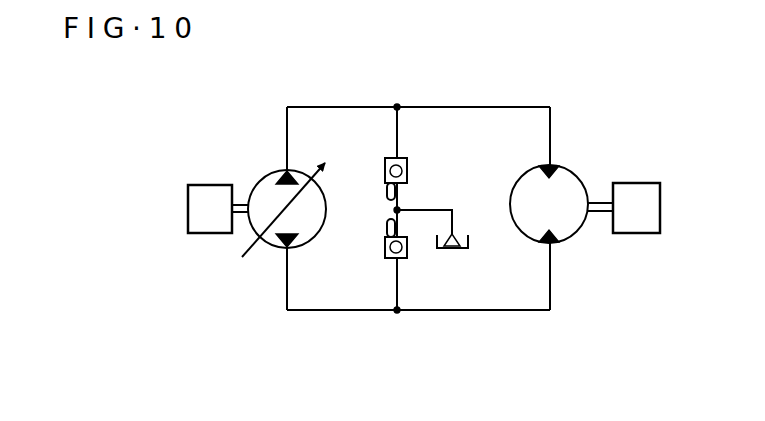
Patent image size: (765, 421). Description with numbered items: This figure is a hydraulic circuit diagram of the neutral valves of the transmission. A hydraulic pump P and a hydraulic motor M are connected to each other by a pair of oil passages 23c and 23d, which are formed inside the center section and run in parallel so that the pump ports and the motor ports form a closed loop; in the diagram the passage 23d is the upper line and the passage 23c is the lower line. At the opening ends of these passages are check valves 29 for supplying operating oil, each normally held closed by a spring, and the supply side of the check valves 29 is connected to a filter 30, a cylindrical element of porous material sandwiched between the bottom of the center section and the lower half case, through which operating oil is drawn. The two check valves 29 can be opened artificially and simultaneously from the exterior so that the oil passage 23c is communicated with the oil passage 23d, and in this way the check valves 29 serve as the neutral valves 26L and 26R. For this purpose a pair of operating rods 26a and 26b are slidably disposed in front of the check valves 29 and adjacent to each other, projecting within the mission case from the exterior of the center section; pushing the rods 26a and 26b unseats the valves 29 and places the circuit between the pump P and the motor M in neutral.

The oil passage 23d is at (449, 107).
The oil passage 23c is at (477, 312).
The neutral valve 26L is at (388, 150).
The neutral valve 26R is at (392, 263).
The operating rod 26a is at (387, 190).
The operating rod 26b is at (386, 226).
The check valve 29 is at (406, 157).
The filter 30 is at (460, 222).
The hydraulic pump P is at (270, 254).
The hydraulic motor M is at (570, 250).